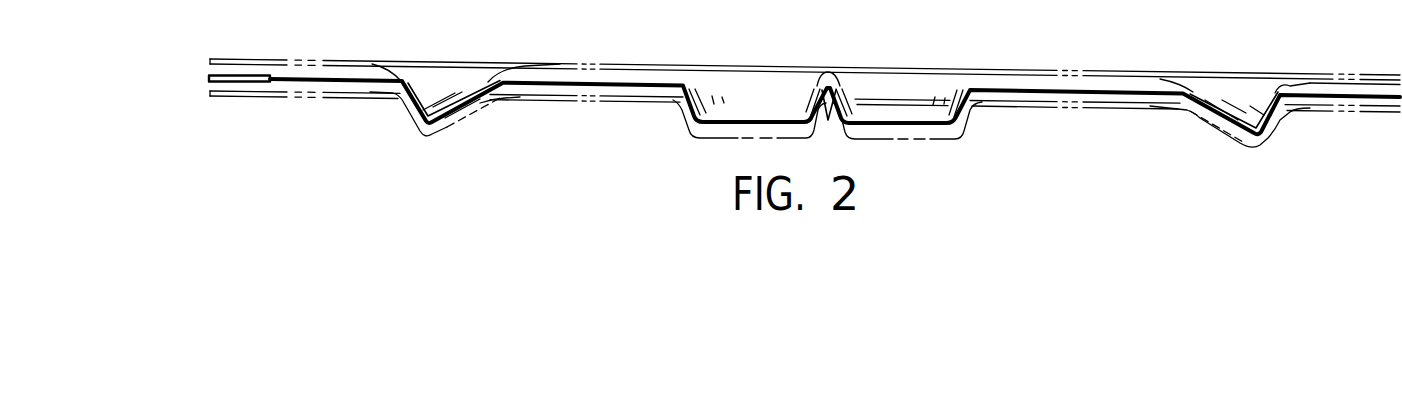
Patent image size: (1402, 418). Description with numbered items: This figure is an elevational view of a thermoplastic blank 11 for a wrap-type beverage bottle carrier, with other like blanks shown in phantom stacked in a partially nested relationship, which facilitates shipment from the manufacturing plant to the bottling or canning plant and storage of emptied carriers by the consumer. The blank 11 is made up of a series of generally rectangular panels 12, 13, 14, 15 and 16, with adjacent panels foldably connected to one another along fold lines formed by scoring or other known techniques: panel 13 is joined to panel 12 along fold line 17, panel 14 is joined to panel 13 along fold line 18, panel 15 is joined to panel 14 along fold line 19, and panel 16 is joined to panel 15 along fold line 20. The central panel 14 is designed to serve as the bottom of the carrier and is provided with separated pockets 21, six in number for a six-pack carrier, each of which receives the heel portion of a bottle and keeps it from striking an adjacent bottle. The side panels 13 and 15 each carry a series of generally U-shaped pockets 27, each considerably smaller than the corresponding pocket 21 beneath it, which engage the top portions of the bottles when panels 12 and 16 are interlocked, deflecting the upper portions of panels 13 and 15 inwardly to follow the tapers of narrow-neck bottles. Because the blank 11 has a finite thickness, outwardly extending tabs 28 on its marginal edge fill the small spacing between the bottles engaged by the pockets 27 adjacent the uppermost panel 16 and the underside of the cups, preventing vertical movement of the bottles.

The blank 11 is at (193, 86).
The panel 12 is at (332, 74).
The panel 13 is at (552, 76).
The panel 14 is at (851, 83).
The panel 15 is at (1108, 87).
The panel 16 is at (1368, 88).
The fold line 17 is at (399, 82).
The fold line 18 is at (680, 85).
The fold line 19 is at (973, 88).
The fold line 20 is at (1289, 86).
The pocket 21 is at (848, 121).
The U-shaped pocket 27 is at (422, 133).
The tab 28 is at (235, 74).